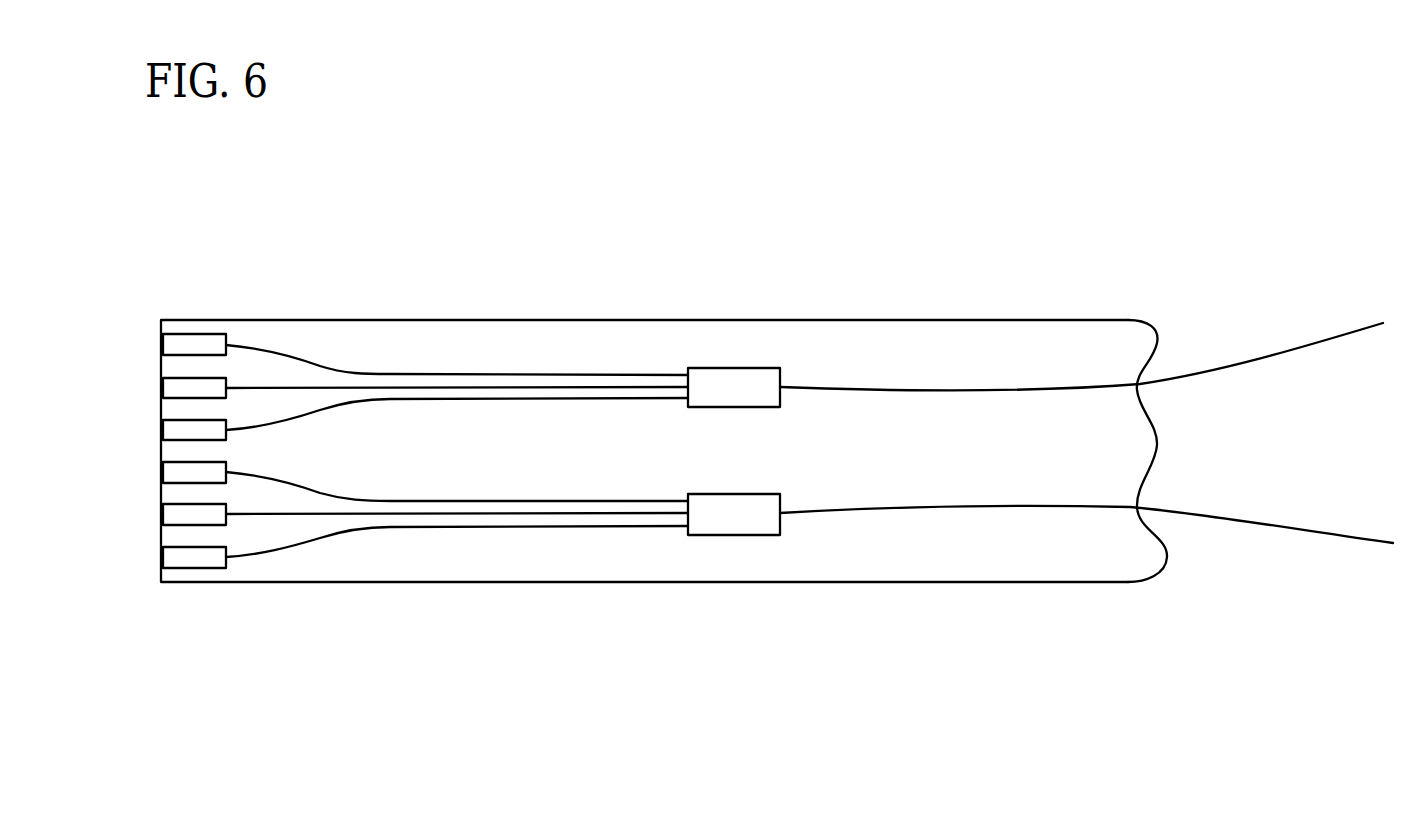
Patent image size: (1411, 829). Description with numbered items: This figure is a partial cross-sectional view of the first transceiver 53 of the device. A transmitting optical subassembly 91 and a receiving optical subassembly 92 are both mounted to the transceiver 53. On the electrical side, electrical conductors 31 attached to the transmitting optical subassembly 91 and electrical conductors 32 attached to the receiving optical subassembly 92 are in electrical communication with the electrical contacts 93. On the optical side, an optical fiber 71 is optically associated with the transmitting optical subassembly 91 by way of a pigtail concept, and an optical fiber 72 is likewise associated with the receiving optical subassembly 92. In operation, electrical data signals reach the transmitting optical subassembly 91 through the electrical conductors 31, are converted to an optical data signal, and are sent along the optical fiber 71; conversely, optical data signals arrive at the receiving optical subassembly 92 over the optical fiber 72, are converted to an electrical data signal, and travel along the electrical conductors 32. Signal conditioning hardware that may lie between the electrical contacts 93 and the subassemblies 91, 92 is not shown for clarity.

The first transceiver 53 is at (288, 320).
The electrical contacts 93 is at (160, 452).
The electrical conductors 32 is at (512, 373).
The electrical conductors 31 is at (513, 527).
The receiving optical subassembly 92 is at (733, 368).
The transmitting optical subassembly 91 is at (735, 535).
The optical fiber 72 is at (1290, 352).
The optical fiber 71 is at (1270, 524).